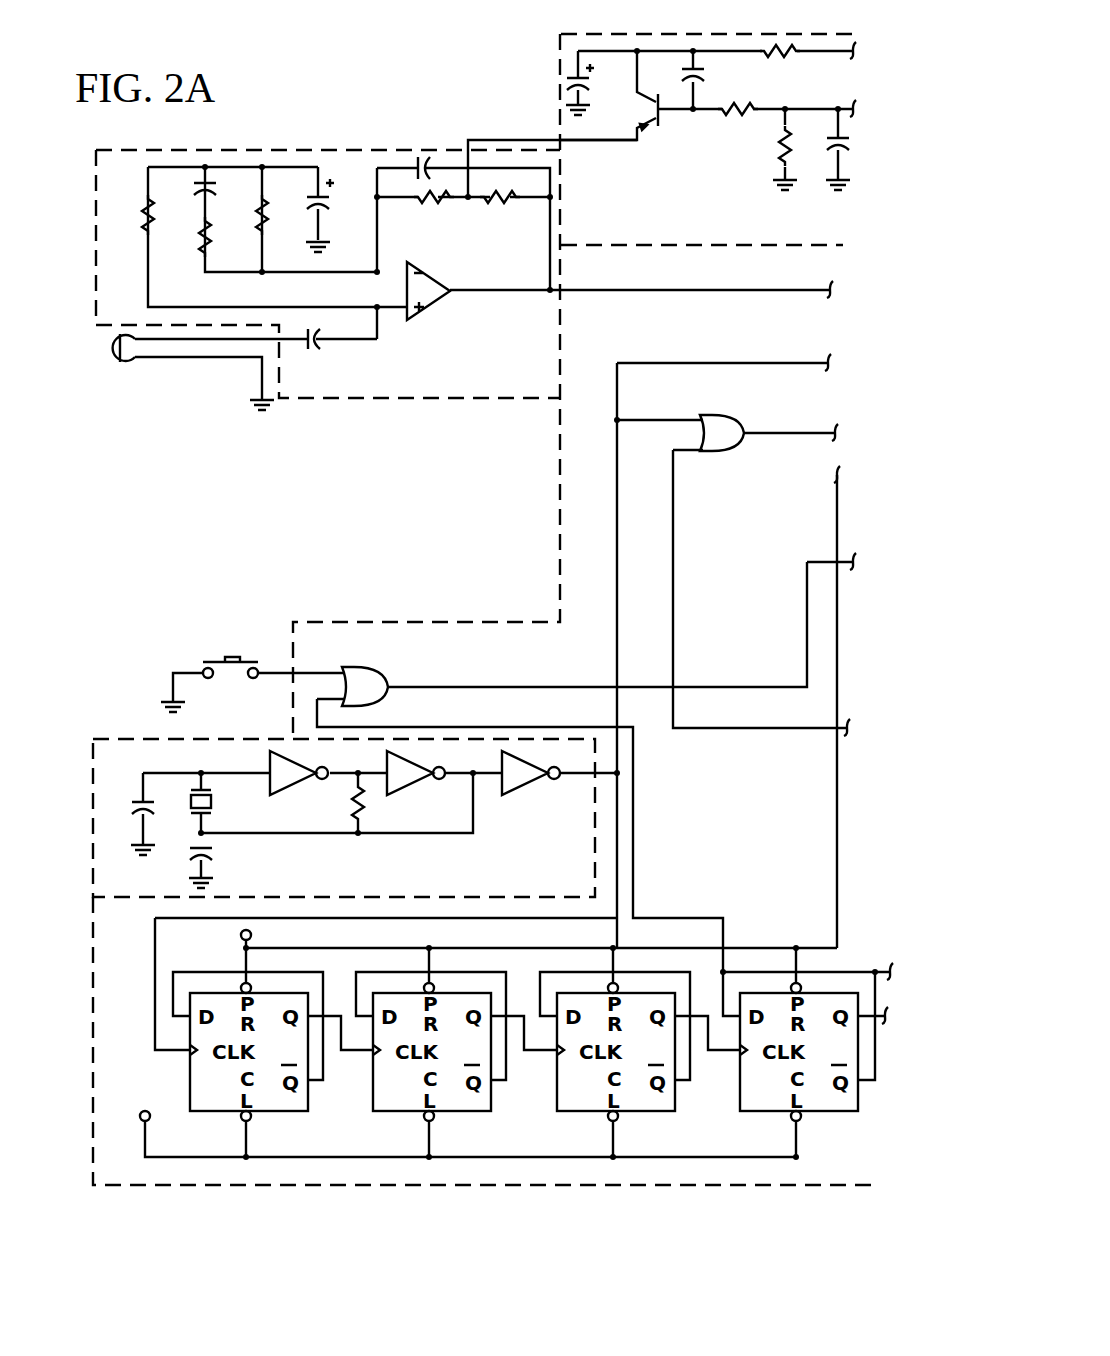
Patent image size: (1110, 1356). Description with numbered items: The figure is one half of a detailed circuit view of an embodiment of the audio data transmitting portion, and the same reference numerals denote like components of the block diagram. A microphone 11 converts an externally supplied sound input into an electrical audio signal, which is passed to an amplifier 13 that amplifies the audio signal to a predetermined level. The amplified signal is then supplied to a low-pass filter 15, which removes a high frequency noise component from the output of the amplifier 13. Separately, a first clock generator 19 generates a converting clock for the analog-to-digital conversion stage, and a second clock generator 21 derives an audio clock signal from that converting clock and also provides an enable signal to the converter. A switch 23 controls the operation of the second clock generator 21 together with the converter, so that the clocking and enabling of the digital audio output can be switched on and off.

The microphone 11 is at (122, 362).
The amplifier 13 is at (357, 150).
The low-pass filter 15 is at (561, 62).
The first clock generator 19 is at (93, 825).
The second clock generator 21 is at (93, 1005).
The switch 23 is at (230, 650).